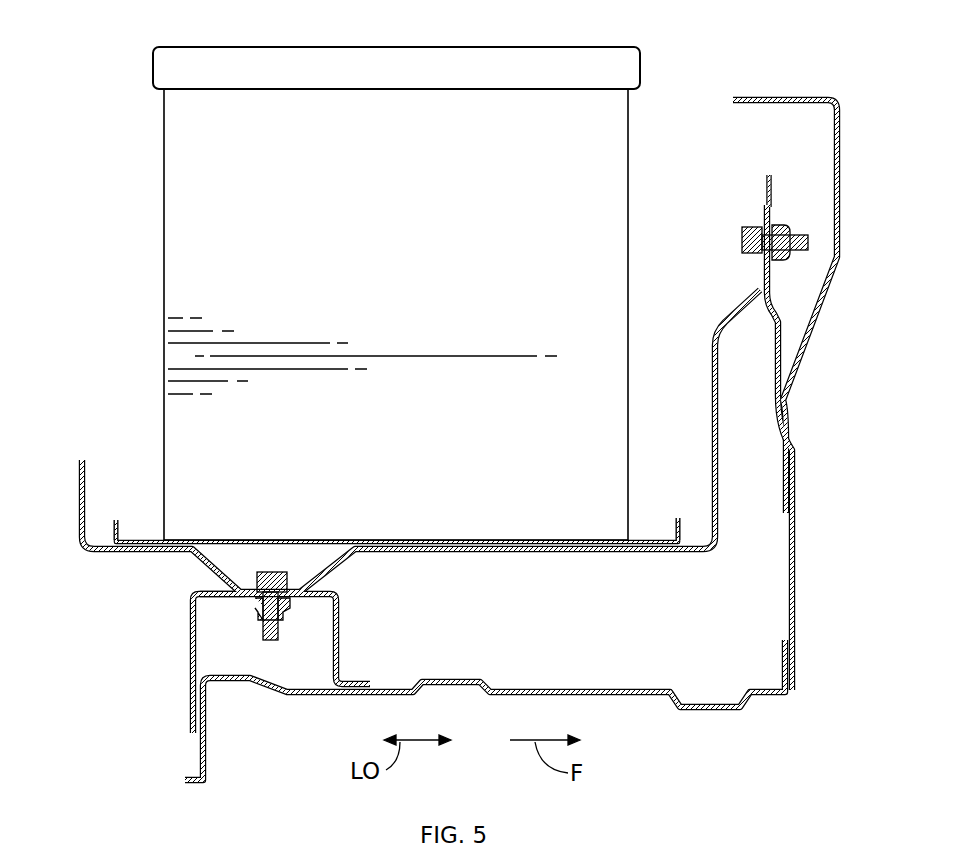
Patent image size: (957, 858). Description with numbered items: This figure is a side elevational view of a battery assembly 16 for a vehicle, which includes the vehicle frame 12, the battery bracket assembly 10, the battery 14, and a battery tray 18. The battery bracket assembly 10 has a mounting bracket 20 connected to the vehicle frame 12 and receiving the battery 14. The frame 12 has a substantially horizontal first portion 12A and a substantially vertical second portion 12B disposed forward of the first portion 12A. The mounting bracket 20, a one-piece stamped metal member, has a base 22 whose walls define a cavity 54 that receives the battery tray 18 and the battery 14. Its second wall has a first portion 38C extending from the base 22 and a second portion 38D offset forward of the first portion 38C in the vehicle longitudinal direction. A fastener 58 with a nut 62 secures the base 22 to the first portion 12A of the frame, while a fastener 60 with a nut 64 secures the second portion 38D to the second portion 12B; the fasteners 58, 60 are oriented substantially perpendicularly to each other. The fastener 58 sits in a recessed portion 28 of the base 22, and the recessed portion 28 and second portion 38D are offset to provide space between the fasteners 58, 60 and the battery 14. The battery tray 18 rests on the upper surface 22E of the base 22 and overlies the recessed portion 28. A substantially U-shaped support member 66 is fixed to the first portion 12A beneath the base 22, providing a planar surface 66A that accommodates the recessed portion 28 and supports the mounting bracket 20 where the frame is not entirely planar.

The battery bracket assembly 10 is at (43, 496).
The vehicle frame 12 is at (850, 152).
The first portion 12A is at (605, 688).
The second portion 12B is at (775, 200).
The battery 14 is at (165, 185).
The battery assembly 16 is at (118, 682).
The battery tray 18 is at (124, 528).
The mounting bracket 20 is at (78, 537).
The base 22 is at (646, 556).
The upper surface 22E is at (694, 532).
The recessed portion 28 is at (215, 578).
The first portion 38C is at (720, 505).
The second portion 38D is at (760, 276).
The cavity 54 is at (665, 407).
The fastener 58 is at (262, 628).
The fastener 60 is at (742, 238).
The nut 62 is at (292, 612).
The nut 64 is at (780, 258).
The support member 66 is at (340, 640).
The planar surface 66A is at (205, 589).